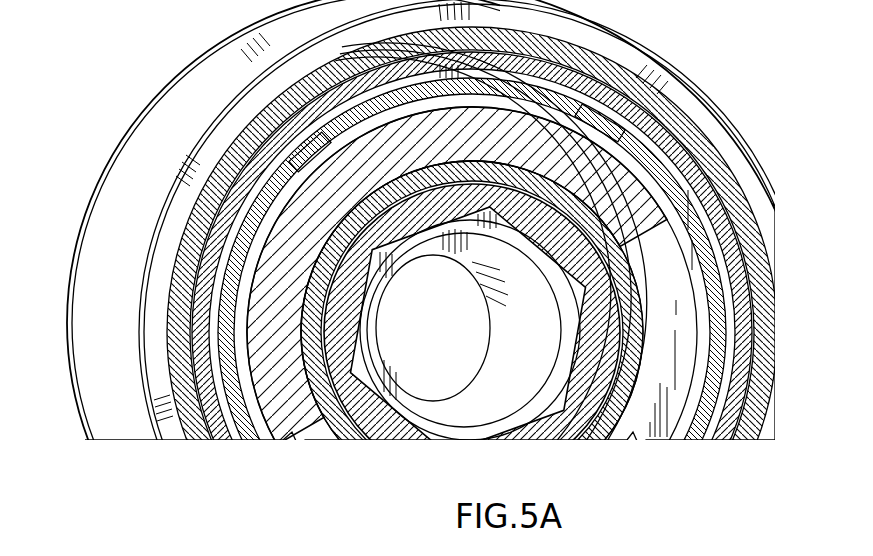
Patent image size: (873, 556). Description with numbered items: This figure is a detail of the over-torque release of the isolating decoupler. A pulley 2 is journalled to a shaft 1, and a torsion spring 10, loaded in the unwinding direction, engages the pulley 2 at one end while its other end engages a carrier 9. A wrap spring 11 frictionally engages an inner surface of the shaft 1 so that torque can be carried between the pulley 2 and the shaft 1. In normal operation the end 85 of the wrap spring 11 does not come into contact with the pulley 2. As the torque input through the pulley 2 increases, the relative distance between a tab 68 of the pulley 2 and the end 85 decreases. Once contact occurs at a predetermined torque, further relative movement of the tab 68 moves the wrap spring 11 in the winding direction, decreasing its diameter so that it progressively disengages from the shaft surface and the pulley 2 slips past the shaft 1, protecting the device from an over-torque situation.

The shaft 1 is at (302, 280).
The pulley 2 is at (98, 242).
The carrier 9 is at (307, 317).
The torsion spring 10 is at (630, 213).
The wrap spring 11 is at (745, 277).
The tab 68 is at (307, 140).
The end 85 is at (617, 158).